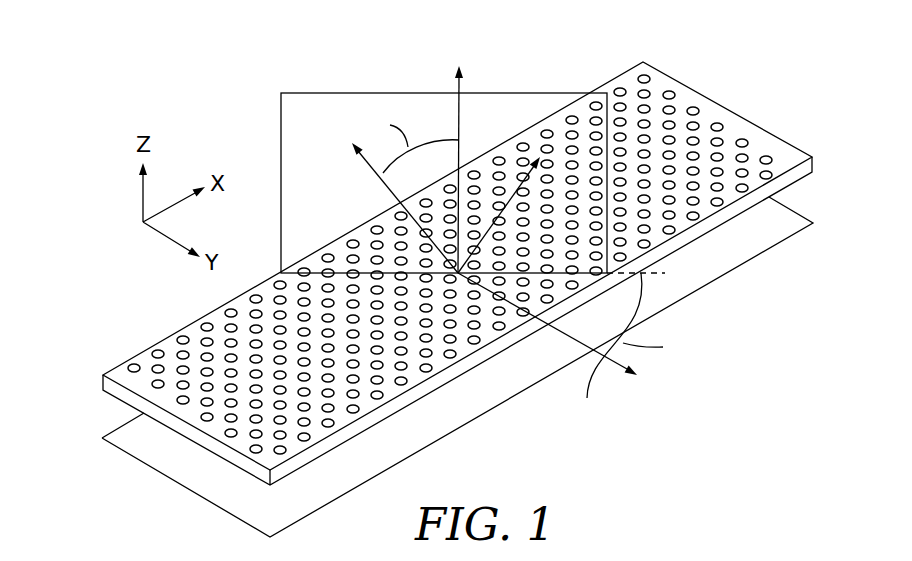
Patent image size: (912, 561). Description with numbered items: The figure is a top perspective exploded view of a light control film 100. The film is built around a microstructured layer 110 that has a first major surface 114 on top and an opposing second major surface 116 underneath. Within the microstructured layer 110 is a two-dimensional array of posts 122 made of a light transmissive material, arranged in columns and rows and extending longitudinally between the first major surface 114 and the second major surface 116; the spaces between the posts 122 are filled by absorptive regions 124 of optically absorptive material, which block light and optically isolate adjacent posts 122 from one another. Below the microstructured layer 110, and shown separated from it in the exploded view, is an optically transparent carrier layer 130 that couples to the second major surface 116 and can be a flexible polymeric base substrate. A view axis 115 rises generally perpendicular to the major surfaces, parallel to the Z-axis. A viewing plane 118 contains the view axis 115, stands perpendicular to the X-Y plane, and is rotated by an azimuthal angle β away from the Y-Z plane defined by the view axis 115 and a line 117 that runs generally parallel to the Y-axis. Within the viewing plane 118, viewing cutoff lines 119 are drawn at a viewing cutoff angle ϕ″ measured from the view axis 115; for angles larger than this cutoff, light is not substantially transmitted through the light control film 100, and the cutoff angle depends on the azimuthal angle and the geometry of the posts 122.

The light control film 100 is at (768, 67).
The microstructured layer 110 is at (660, 77).
The first major surface 114 is at (143, 360).
The second major surface 116 is at (117, 400).
The view axis 115 is at (452, 86).
The line 117 is at (571, 348).
The viewing plane 118 is at (310, 93).
The viewing cutoff lines 119 is at (535, 157).
The posts 122 is at (747, 138).
The absorptive regions 124 is at (702, 100).
The carrier layer 130 is at (165, 455).